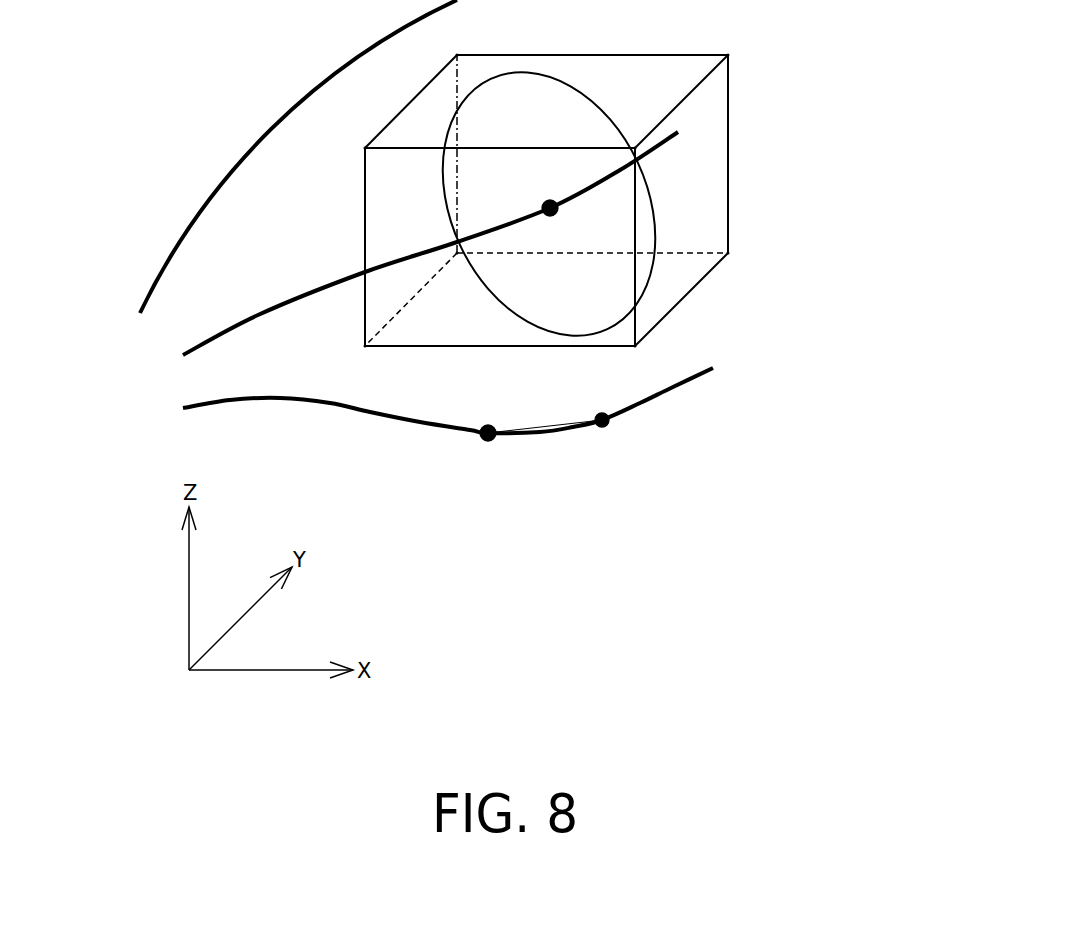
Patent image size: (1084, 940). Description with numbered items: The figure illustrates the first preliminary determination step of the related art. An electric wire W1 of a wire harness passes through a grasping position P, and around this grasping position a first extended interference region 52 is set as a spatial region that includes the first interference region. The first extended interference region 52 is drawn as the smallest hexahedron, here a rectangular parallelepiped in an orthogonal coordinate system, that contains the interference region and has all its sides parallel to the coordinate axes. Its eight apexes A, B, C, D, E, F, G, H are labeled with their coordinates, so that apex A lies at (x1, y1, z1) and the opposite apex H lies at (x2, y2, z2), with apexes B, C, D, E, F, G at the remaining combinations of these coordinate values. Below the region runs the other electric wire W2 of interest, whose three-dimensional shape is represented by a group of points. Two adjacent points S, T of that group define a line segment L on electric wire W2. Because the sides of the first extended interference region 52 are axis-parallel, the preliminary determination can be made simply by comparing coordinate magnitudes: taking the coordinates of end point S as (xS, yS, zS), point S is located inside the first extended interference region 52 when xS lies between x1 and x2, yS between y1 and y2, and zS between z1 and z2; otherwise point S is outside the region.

The first extended interference region 52 is at (656, 65).
The electric wire W1 is at (258, 315).
The electric wire W2 is at (318, 407).
The line segment L is at (545, 443).
The grasping position P is at (549, 196).
The end point of line segment S is at (488, 441).
The end point of line segment T is at (603, 436).
The apex of first extended interference region A is at (417, 361).
The apex of first extended interference region B is at (701, 353).
The apex of first extended interference region C is at (458, 253).
The apex of first extended interference region D is at (793, 255).
The apex of first extended interference region E is at (365, 149).
The apex of first extended interference region F is at (637, 148).
The apex of first extended interference region G is at (499, 42).
The apex of first extended interference region H is at (793, 56).